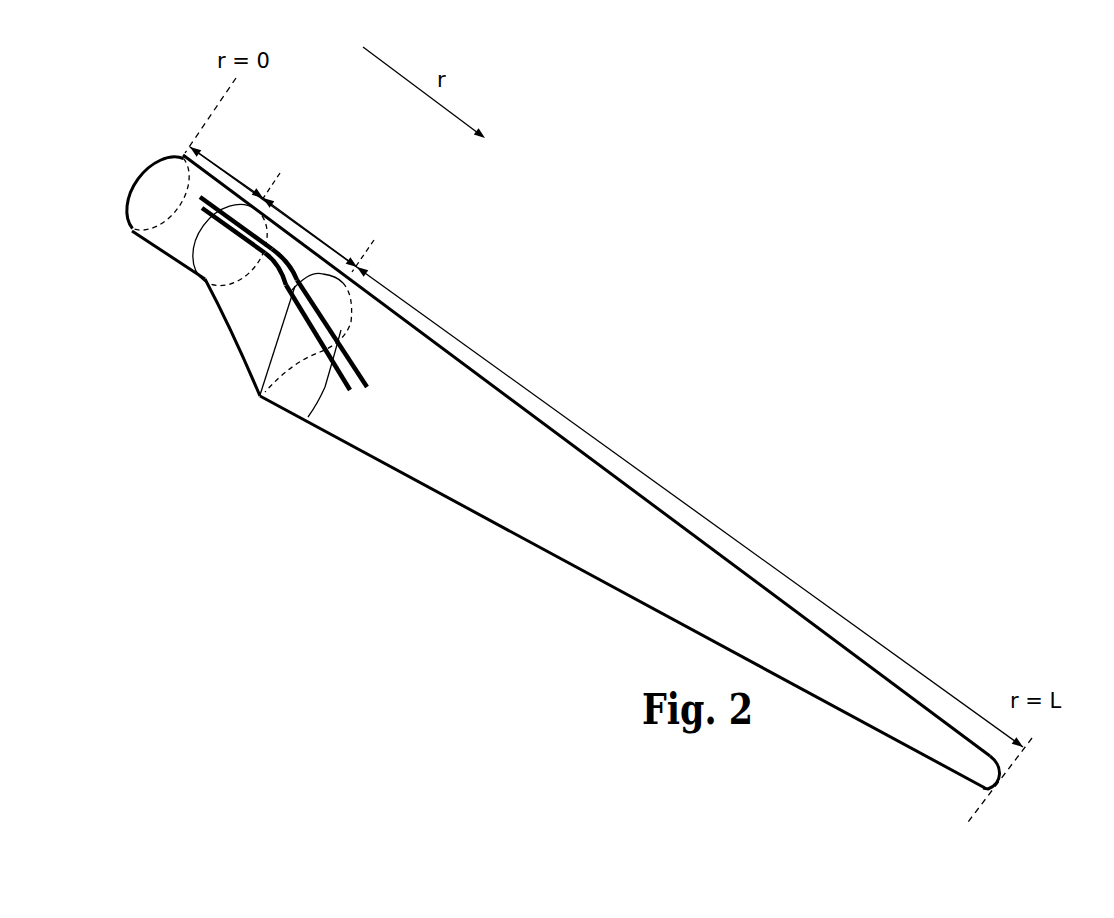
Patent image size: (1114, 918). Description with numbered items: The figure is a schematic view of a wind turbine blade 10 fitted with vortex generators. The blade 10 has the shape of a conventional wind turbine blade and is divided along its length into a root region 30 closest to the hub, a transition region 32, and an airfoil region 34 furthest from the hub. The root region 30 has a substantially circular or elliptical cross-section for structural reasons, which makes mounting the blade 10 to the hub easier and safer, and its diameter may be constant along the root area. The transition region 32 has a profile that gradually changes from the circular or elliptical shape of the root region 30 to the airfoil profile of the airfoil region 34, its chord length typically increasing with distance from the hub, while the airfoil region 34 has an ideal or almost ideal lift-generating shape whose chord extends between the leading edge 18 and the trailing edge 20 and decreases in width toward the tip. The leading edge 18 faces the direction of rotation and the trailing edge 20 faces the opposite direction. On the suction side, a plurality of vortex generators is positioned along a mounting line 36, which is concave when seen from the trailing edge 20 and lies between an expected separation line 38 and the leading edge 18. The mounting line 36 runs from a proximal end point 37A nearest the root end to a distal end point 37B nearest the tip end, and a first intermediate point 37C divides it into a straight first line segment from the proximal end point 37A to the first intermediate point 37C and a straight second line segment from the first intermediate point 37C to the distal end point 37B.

The wind turbine blade 10 is at (648, 287).
The leading edge 18 is at (548, 426).
The trailing edge 20 is at (492, 523).
The root region 30 is at (221, 168).
The transition region 32 is at (333, 243).
The airfoil region 34 is at (657, 481).
The mounting line 36 is at (348, 386).
The proximal end point 37A is at (195, 243).
The distal end point 37B is at (372, 388).
The first intermediate point 37C is at (287, 247).
The expected separation line 38 is at (308, 417).